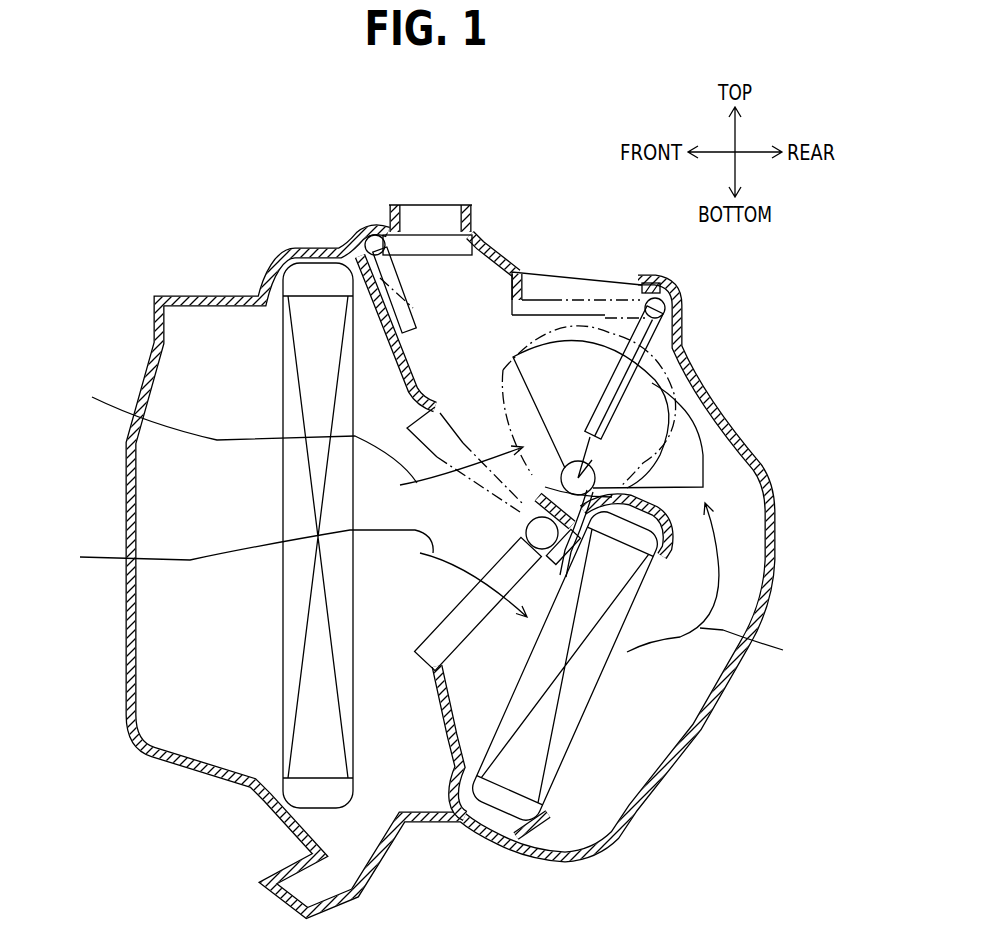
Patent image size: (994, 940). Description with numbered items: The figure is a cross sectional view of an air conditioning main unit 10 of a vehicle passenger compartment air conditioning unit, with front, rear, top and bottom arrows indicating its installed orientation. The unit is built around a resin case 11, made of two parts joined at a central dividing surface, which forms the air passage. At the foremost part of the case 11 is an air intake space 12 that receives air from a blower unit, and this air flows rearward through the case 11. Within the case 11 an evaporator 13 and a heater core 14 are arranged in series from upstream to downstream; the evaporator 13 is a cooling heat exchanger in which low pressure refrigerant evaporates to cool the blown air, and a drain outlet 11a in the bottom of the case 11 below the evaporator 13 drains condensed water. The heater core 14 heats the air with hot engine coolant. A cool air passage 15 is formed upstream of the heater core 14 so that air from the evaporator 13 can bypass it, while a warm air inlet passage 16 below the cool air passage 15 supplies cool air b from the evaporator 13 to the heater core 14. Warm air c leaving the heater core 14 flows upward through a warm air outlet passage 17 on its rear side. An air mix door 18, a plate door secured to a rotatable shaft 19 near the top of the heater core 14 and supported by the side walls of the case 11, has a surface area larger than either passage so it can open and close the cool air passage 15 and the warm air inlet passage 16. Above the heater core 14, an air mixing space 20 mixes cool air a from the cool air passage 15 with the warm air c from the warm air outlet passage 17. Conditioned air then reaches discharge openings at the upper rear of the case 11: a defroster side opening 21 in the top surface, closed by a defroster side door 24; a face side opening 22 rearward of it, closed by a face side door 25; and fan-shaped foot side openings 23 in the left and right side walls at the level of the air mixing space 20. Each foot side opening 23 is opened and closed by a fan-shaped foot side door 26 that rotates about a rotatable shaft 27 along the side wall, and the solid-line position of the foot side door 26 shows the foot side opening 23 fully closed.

The air conditioning main unit 10 is at (280, 236).
The case 11 is at (200, 296).
The drain outlet 11a is at (333, 878).
The air intake space 12 is at (180, 512).
The evaporator 13 is at (308, 703).
The heater core 14 is at (580, 690).
The cool air passage 15 is at (486, 447).
The warm air inlet passage 16 is at (483, 630).
The warm air outlet passage 17 is at (697, 578).
The air mix door 18 is at (432, 636).
The rotatable shaft 19 is at (525, 530).
The air mixing space 20 is at (641, 294).
The defroster side opening 21 is at (420, 218).
The face side opening 22 is at (595, 272).
The foot side opening 23 is at (628, 378).
The defroster side door 24 is at (440, 240).
The face side door 25 is at (677, 330).
The foot side door 26 is at (705, 453).
The rotatable shaft 27 is at (645, 430).
The cool air a is at (297, 433).
The air (cool air) b is at (291, 573).
The warm air c is at (754, 646).